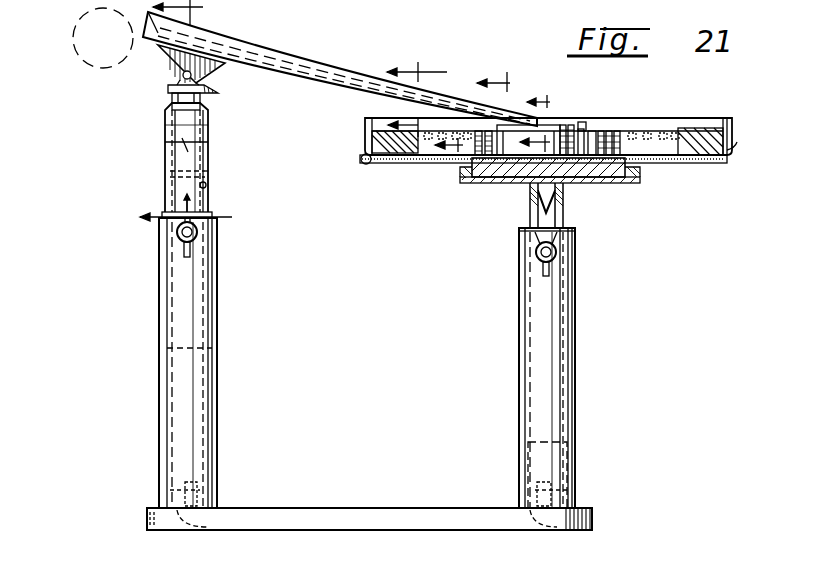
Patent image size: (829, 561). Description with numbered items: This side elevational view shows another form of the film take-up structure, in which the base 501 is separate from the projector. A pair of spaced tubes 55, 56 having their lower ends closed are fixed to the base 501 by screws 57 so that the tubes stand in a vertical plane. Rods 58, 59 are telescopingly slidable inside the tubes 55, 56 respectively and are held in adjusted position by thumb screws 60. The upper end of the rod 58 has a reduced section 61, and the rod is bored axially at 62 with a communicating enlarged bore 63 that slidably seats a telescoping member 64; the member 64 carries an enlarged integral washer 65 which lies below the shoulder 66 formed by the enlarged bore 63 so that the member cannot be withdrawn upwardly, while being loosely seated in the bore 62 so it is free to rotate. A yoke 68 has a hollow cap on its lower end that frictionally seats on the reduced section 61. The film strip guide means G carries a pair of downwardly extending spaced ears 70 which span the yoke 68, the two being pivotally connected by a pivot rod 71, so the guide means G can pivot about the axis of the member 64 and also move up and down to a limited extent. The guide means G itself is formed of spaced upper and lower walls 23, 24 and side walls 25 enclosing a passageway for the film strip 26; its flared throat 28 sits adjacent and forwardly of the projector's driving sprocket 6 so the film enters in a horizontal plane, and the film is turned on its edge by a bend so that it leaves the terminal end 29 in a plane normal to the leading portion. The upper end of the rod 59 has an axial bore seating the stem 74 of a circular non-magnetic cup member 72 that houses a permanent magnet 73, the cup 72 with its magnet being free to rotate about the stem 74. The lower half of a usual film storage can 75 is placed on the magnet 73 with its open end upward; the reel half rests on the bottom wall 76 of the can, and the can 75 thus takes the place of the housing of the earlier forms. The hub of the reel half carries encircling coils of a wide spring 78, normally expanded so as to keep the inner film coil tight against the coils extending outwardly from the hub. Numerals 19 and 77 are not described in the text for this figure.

The film driving sprocket 6 is at (80, 22).
The slide 19 is at (590, 127).
The upper wall 23 is at (191, 118).
The lower wall 24 is at (425, 93).
The side wall 25 is at (485, 123).
The film strip 26 is at (695, 150).
The flared throat 28 is at (180, 27).
The terminal end 29 is at (565, 130).
The tube 55 is at (217, 398).
The tube 56 is at (520, 358).
The screw 57 is at (203, 500).
The rod 58 is at (167, 152).
The rod 59 is at (534, 200).
The thumb screw 60 is at (196, 240).
The reduced section 61 is at (205, 97).
The axial bore 62 is at (215, 133).
The enlarged bore 63 is at (207, 186).
The telescoping member 64 is at (170, 170).
The washer 65 is at (164, 181).
The shoulder 66 is at (210, 175).
The yoke 68 is at (218, 90).
The ear 70 is at (167, 58).
The pivot rod 71 is at (182, 78).
The cup member 72 is at (622, 178).
The permanent magnet 73 is at (587, 167).
The stem 74 is at (554, 205).
The film storage can 75 is at (735, 144).
The bottom wall 76 is at (730, 133).
The bottom strip 77 is at (678, 160).
The wide spring 78 is at (627, 128).
The base 501 is at (403, 508).
The film strip guide means G is at (320, 66).